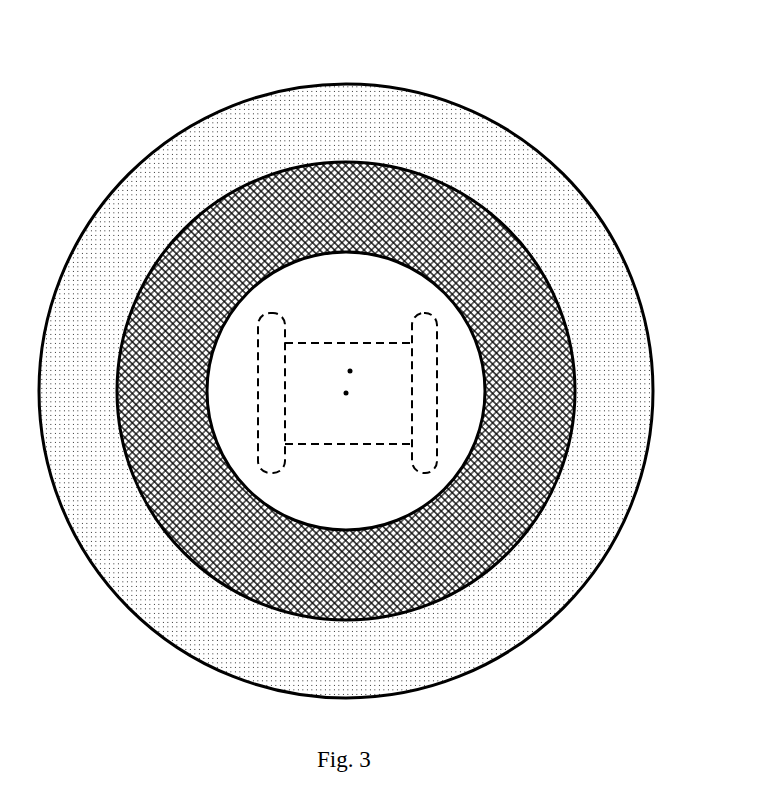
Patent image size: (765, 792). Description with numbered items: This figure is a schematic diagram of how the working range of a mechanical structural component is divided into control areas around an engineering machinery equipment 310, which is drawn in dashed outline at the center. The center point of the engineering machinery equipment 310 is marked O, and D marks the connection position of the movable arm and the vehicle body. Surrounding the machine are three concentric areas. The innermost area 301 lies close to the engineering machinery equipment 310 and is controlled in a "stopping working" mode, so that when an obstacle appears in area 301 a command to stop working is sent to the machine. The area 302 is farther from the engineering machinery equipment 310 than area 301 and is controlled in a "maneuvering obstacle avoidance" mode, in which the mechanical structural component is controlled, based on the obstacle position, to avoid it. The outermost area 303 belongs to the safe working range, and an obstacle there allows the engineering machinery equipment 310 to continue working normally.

The area 301 is at (247, 312).
The area 302 is at (293, 173).
The area 303 is at (525, 172).
The engineering machinery equipment 310 is at (318, 428).